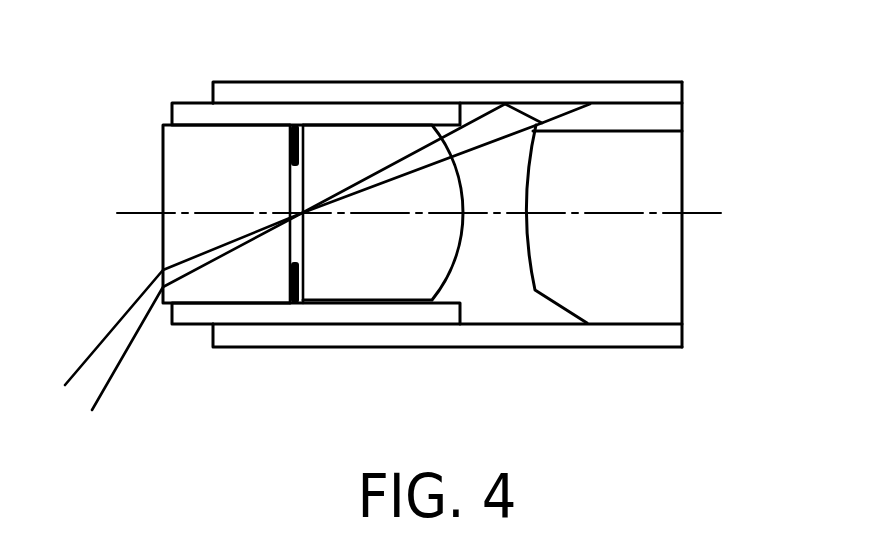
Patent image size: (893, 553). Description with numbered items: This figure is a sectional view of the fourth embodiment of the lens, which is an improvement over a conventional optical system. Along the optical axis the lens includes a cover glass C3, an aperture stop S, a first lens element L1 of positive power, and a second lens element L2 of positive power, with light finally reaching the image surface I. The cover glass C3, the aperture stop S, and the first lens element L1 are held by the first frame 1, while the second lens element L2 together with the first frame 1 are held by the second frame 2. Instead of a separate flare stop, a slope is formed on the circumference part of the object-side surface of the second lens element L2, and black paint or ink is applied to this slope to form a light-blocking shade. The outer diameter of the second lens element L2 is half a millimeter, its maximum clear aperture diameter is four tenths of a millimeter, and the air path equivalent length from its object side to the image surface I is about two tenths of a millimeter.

The first frame 1 is at (201, 113).
The second frame 2 is at (378, 90).
The aperture stop S is at (297, 143).
The cover glass C3 is at (197, 287).
The first lens element L1 is at (360, 290).
The second lens element L2 is at (630, 285).
The image surface I is at (682, 295).